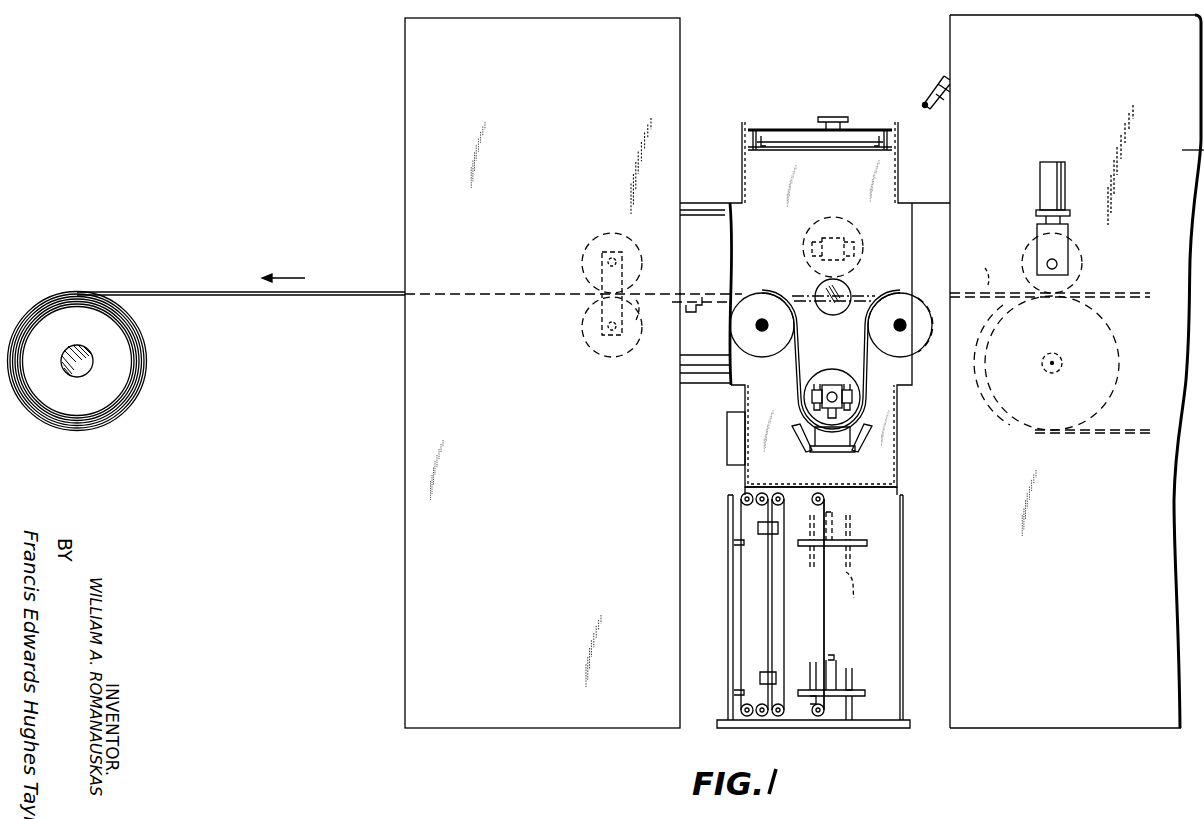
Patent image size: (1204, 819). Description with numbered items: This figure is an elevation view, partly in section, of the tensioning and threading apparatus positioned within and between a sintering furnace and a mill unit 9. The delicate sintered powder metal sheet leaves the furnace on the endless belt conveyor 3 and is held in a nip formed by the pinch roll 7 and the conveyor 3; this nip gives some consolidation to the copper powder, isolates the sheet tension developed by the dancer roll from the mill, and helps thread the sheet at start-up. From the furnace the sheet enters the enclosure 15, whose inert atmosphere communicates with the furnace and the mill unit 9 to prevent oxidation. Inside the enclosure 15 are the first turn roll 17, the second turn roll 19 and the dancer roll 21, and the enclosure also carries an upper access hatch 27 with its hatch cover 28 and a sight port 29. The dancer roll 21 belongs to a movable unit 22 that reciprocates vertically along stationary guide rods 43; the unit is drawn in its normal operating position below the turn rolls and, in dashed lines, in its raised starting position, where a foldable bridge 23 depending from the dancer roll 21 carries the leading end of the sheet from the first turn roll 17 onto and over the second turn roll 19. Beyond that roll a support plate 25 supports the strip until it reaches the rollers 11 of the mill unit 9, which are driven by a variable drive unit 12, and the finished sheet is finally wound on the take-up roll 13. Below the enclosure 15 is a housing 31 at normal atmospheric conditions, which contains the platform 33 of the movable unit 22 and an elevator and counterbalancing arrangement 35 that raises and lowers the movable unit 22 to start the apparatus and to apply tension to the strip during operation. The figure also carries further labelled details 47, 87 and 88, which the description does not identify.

The endless belt conveyor 3 is at (1018, 426).
The pinch roll 7 is at (1084, 264).
The mill unit 9 is at (672, 58).
The rollers 11 is at (632, 233).
The variable drive unit 12 is at (600, 327).
The take-up roll 13 is at (135, 322).
The enclosure 15 is at (898, 168).
The first turn roll 17 is at (890, 350).
The second turn roll 19 is at (766, 350).
The dancer roll 21 is at (836, 372).
The movable unit 22 is at (882, 495).
The foldable bridge 23 is at (850, 448).
The support plate 25 is at (668, 310).
The upper access hatch 27 is at (808, 150).
The hatch cover 28 is at (778, 130).
The sight port 29 is at (818, 286).
The housing 31 is at (900, 603).
The platform 33 is at (868, 544).
The elevator and counterbalancing arrangement 35 is at (830, 653).
The stationary guide rod 43 is at (852, 708).
The guide bracket 47 is at (808, 448).
The tape clamp 87 is at (686, 316).
The side port 88 is at (727, 435).